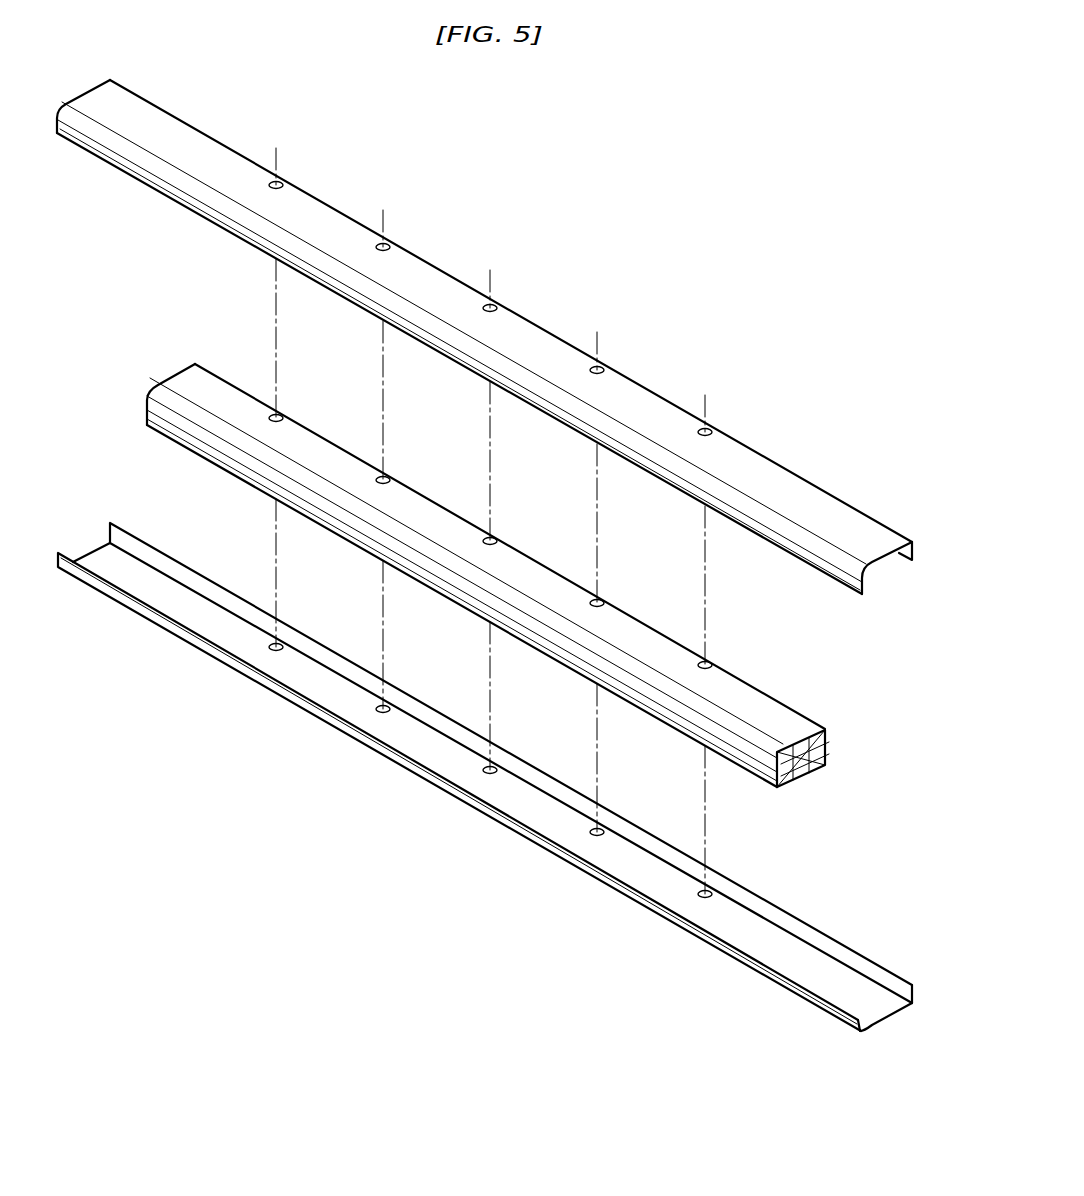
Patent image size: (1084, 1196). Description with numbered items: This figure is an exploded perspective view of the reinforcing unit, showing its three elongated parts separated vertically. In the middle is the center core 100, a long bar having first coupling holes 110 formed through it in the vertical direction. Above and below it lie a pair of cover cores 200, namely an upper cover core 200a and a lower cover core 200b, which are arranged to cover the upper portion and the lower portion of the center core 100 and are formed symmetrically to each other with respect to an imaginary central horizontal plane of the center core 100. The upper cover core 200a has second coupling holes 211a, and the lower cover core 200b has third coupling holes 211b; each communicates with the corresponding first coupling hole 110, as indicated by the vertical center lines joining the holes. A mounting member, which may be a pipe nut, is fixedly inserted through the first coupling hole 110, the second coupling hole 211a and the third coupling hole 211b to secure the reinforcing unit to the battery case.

The center core 100 is at (776, 709).
The first coupling hole 110 is at (282, 413).
The cover cores 200 is at (486, 555).
The upper cover core 200a is at (667, 413).
The lower cover core 200b is at (856, 967).
The second coupling hole 211a is at (390, 243).
The third coupling hole 211b is at (284, 641).